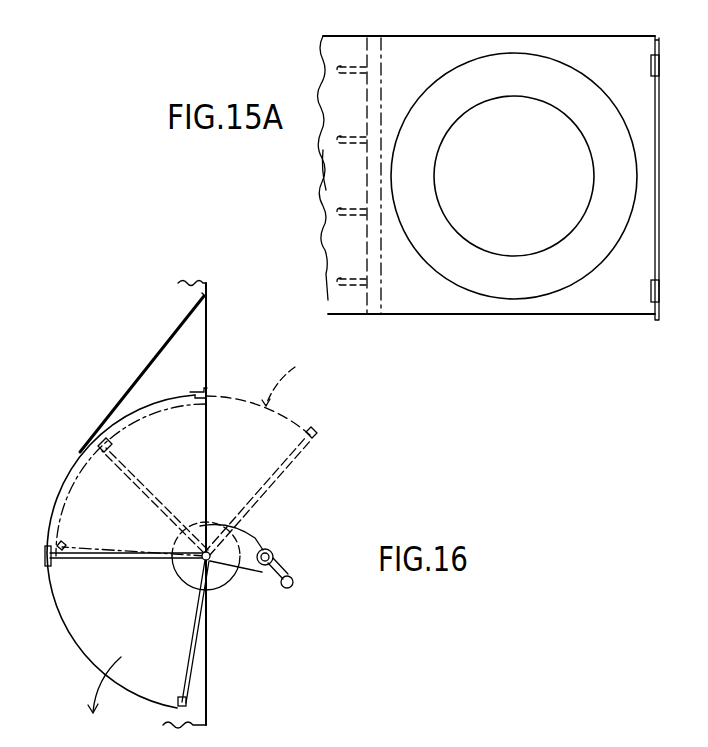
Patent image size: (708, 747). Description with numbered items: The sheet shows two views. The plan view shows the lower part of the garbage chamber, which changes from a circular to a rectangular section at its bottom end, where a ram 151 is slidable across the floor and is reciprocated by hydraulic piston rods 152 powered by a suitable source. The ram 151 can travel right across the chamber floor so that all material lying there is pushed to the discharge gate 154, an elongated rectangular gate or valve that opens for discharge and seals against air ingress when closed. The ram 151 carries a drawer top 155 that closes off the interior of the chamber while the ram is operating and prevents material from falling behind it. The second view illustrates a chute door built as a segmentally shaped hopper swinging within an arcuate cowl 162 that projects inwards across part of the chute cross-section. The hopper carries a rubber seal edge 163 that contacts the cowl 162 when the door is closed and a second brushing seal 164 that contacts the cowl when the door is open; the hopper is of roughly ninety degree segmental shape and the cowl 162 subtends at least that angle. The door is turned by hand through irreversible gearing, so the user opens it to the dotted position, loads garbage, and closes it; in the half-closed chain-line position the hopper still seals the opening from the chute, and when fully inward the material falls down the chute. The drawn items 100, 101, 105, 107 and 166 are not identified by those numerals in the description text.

In FIG. 15A, the ram 151 is at (381, 62).
In FIG. 15A, the hydraulic piston rods 152 is at (352, 70).
In FIG. 15A, the discharge gate 154 is at (660, 36).
In FIG. 15A, the drawer top 155 is at (342, 179).
In FIG. 16, the door swing path 100 is at (267, 475).
In FIG. 16, the pivot 101 is at (212, 560).
In FIG. 16, the crank arm 105 is at (252, 542).
In FIG. 16, the post 107 is at (208, 655).
In FIG. 16, the arcuate cowl 162 is at (129, 407).
In FIG. 16, the rubber seal edge 163 is at (209, 393).
In FIG. 16, the brushing seal 164 is at (108, 447).
In FIG. 16, the strut 166 is at (163, 356).